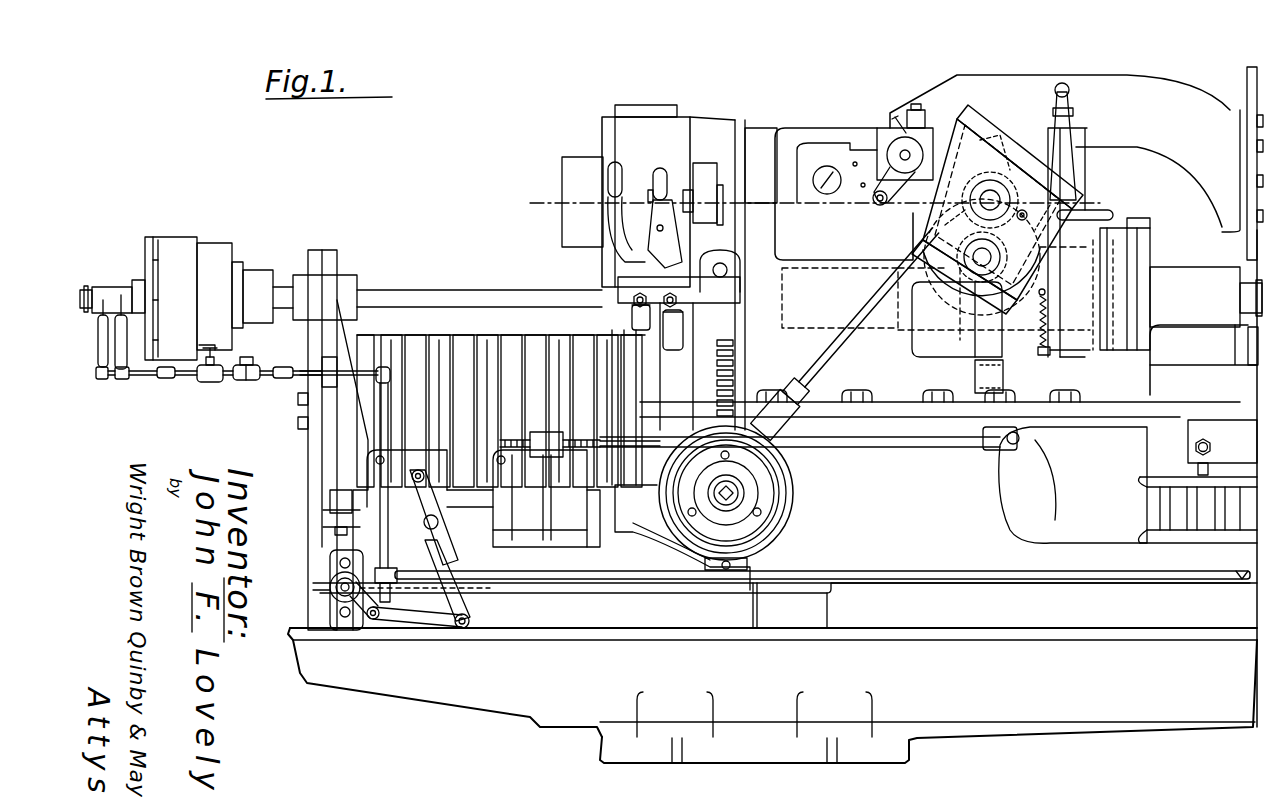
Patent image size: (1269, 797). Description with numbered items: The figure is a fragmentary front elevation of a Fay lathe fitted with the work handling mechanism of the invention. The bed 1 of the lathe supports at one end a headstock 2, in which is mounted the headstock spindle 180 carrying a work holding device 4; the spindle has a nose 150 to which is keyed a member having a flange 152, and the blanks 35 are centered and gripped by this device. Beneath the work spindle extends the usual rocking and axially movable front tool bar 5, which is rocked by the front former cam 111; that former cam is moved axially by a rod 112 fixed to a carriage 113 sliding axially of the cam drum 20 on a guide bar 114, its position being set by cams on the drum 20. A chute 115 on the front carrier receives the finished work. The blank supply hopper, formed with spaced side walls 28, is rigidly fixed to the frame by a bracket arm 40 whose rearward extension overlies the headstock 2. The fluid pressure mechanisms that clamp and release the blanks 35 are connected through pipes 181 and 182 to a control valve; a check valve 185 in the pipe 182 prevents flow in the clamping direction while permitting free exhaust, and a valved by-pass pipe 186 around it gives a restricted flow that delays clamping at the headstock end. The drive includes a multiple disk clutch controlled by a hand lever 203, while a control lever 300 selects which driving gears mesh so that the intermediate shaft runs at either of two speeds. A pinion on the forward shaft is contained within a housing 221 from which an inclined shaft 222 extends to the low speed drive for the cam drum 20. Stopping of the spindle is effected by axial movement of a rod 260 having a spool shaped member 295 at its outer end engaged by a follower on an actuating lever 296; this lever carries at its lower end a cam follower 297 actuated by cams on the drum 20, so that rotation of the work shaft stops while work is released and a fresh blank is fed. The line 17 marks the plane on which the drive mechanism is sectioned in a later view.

The bed 1 is at (1030, 666).
The headstock 2 is at (890, 273).
The work holding device 4 is at (1169, 272).
The tool bar 5 is at (1160, 400).
The section line 17 is at (539, 212).
The cam drum 20 is at (507, 360).
The side walls 28 is at (1245, 104).
The blanks 35 is at (1240, 294).
The bracket arm 40 is at (1132, 92).
The front former cam 111 is at (1225, 447).
The rod 112 is at (920, 440).
The carriage 113 is at (518, 464).
The guide bar 114 is at (598, 513).
The chute 115 is at (1245, 342).
The spindle nose 150 is at (1113, 238).
The flange 152 is at (1135, 236).
The headstock spindle 180 is at (172, 247).
The pipe 181 is at (112, 378).
The pipe 182 is at (895, 577).
The check valve 185 is at (248, 364).
The valved pipe 186 is at (196, 378).
The hand lever 203 is at (1075, 98).
The housing 221 is at (1012, 168).
The inclined shaft 222 is at (830, 352).
The rod 260 is at (702, 163).
The spool shaped member 295 is at (652, 240).
The actuating lever 296 is at (625, 230).
The cam follower 297 is at (678, 350).
The control lever 300 is at (888, 130).